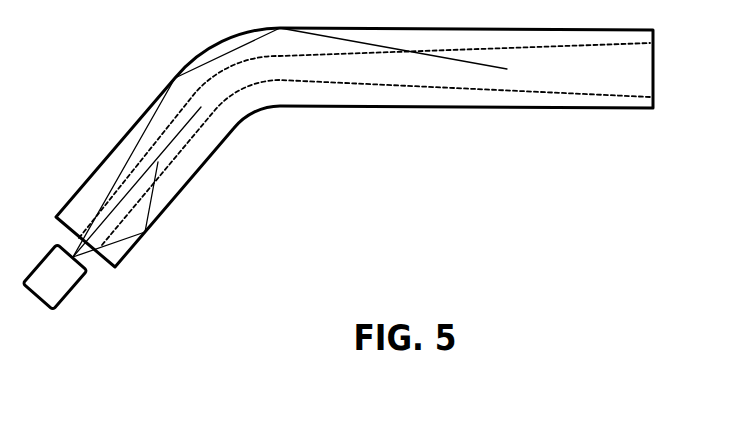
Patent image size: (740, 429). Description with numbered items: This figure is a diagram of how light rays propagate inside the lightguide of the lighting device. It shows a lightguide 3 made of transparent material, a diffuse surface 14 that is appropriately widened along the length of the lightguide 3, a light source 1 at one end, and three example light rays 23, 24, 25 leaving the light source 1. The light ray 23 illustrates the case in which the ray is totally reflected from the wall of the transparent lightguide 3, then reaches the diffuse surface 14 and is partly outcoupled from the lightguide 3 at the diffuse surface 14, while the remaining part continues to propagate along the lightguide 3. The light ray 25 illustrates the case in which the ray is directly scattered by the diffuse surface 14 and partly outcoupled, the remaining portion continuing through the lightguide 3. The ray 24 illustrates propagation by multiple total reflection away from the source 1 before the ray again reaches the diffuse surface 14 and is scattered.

The light source 1 is at (65, 277).
The lightguide 3 is at (535, 110).
The diffuse surface 14 is at (599, 85).
The light ray 23 is at (201, 107).
The light ray 24 is at (507, 69).
The light ray 25 is at (158, 162).